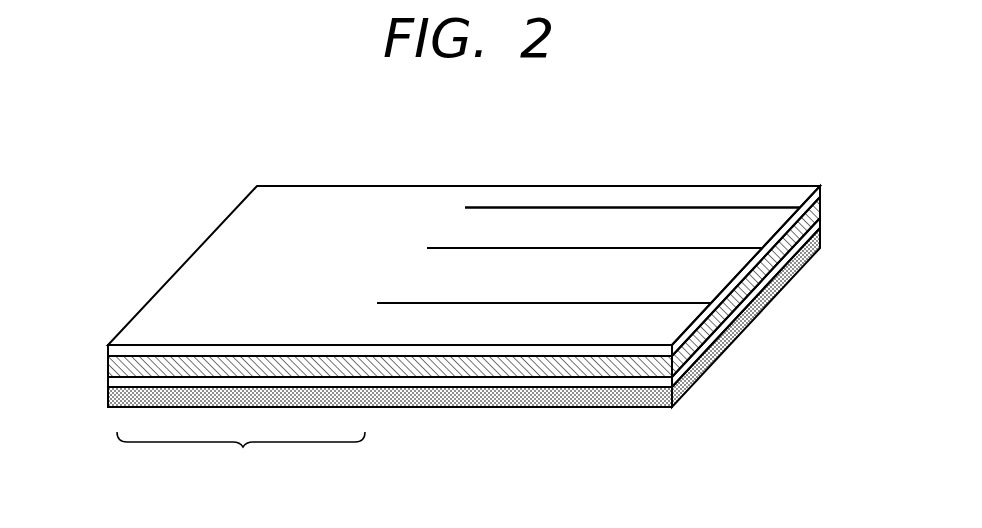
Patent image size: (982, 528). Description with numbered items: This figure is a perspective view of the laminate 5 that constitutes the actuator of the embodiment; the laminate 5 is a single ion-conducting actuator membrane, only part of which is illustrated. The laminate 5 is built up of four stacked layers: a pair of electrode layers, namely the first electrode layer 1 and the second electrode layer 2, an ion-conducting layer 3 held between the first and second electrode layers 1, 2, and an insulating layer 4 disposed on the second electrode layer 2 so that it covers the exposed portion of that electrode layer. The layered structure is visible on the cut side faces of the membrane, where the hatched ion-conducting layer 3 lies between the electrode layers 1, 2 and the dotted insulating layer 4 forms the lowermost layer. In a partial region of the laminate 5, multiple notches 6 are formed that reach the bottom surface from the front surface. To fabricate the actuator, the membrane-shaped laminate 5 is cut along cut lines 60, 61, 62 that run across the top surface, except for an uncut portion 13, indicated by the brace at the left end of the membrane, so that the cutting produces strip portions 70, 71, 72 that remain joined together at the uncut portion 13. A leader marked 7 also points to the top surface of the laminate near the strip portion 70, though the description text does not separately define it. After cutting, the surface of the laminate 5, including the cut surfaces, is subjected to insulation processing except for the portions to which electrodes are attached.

The first electrode layer 1 is at (147, 350).
The second electrode layer 2 is at (113, 382).
The ion-conducting layer 3 is at (113, 367).
The insulating layer 4 is at (117, 398).
The laminate 5 is at (712, 188).
The notches 6 is at (655, 213).
The front region 7 is at (517, 323).
The uncut portion 13 is at (241, 458).
The cut line 60 is at (407, 302).
The cut line 61 is at (473, 247).
The cut line 62 is at (548, 208).
The strip portion 70 is at (657, 330).
The strip portion 71 is at (702, 282).
The strip portion 72 is at (737, 228).